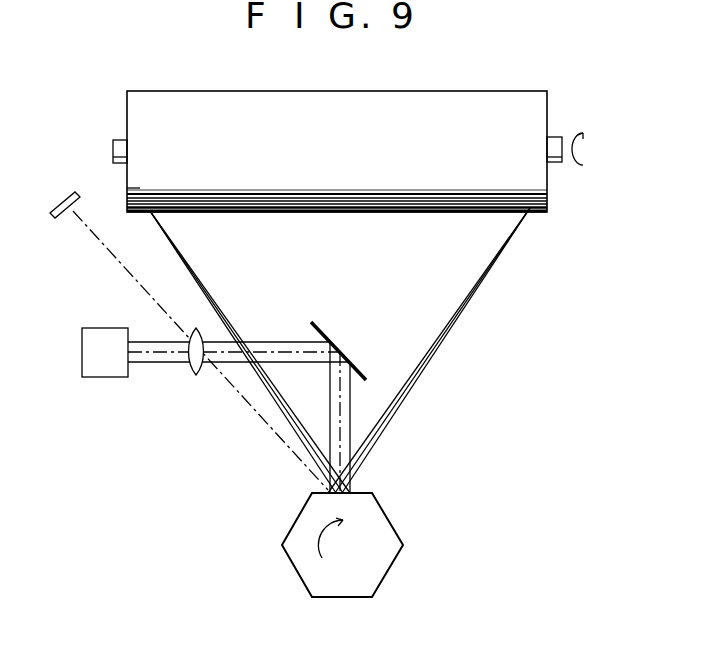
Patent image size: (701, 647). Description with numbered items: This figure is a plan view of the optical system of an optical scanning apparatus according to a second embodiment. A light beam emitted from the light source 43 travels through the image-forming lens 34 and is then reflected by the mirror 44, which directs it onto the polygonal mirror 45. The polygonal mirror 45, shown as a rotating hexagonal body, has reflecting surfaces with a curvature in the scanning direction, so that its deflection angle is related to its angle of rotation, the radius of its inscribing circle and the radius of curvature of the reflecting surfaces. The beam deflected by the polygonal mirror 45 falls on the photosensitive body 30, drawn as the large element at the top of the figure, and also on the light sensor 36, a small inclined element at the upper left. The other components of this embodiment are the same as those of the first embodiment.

The photosensitive body 30 is at (547, 117).
The light sensor 36 is at (54, 221).
The light source 43 is at (95, 378).
The image-forming lens 34 is at (195, 378).
The mirror 44 is at (326, 326).
The polygonal mirror 45 is at (390, 518).